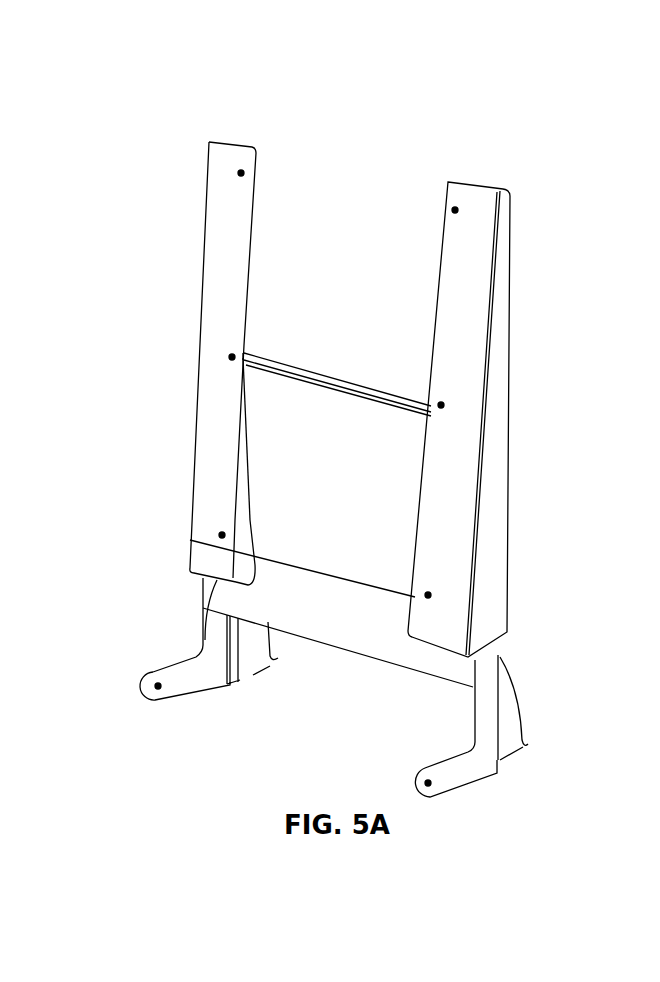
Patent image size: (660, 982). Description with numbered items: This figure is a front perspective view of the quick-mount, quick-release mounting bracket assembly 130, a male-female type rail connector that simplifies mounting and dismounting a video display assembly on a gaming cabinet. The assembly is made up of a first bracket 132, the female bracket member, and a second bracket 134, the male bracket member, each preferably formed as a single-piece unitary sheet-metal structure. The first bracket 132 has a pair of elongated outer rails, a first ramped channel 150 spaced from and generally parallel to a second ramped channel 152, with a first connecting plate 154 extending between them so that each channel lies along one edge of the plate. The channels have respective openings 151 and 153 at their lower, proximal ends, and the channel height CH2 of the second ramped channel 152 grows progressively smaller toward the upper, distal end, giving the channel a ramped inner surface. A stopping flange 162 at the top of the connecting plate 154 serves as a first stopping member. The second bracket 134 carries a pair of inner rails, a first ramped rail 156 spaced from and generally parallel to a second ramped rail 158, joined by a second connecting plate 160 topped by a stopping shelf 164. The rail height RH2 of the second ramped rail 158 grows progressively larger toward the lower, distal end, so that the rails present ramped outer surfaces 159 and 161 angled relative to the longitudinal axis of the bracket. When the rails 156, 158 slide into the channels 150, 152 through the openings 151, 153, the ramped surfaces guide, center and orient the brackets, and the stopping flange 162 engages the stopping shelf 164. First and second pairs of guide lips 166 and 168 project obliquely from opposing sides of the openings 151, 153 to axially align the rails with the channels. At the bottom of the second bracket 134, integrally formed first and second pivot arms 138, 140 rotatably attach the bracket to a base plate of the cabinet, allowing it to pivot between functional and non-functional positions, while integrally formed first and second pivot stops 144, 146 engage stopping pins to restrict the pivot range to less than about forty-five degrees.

The mounting bracket assembly 130 is at (202, 117).
The first bracket 132 is at (372, 399).
The second bracket 134 is at (190, 677).
The first pivot arm 138 is at (140, 684).
The second pivot arm 140 is at (478, 715).
The first pivot stop 144 is at (282, 660).
The second pivot stop 146 is at (530, 745).
The first ramped channel 150 is at (205, 397).
The opening 151 is at (220, 598).
The second ramped channel 152 is at (477, 486).
The opening 153 is at (443, 667).
The first connecting plate 154 is at (316, 399).
The first ramped rail 156 is at (202, 579).
The second ramped rail 158 is at (490, 682).
The ramped outer surface 159 is at (202, 643).
The second connecting plate 160 is at (272, 602).
The ramped outer surface 161 is at (468, 681).
The stopping flange 162 is at (363, 380).
The stopping shelf 164 is at (248, 352).
The first pair of guide lips 166 is at (190, 541).
The second pair of guide lips 168 is at (500, 643).
The channel height CH2 is at (508, 470).
The rail height RH2 is at (500, 663).